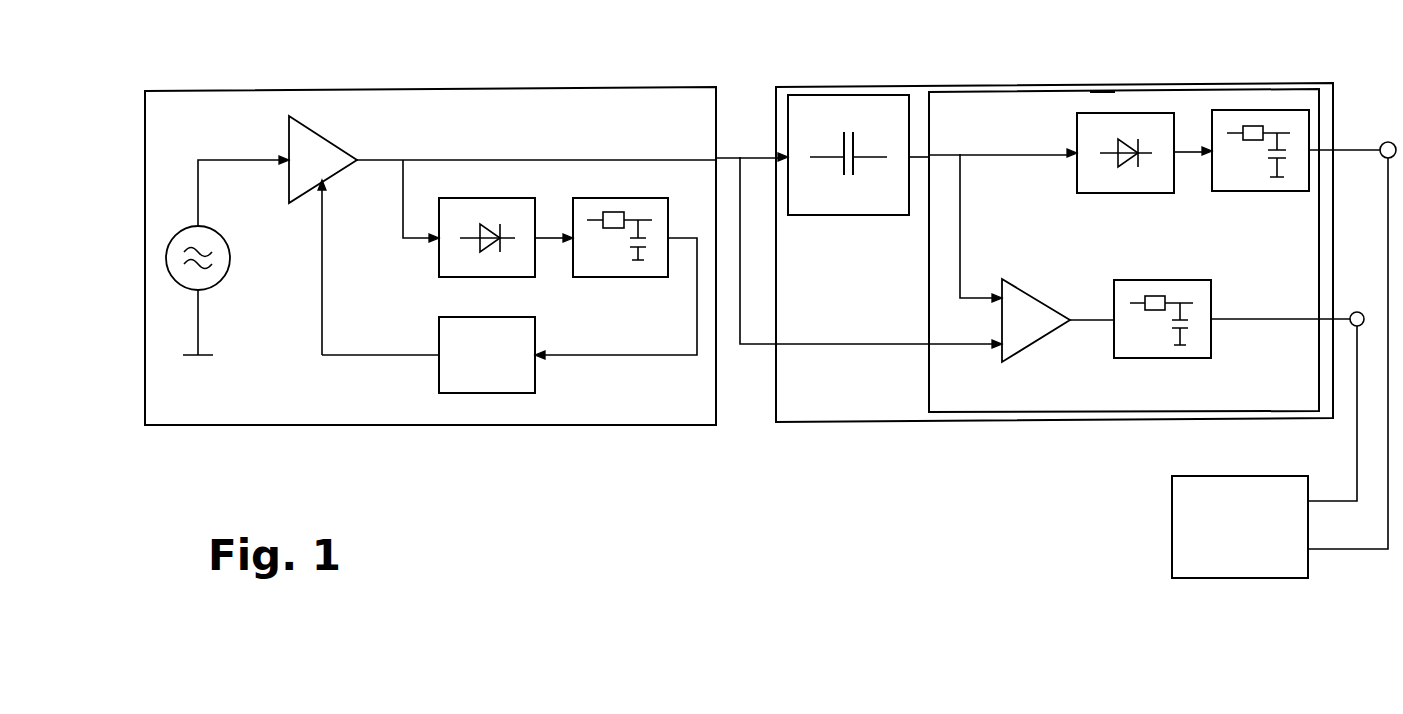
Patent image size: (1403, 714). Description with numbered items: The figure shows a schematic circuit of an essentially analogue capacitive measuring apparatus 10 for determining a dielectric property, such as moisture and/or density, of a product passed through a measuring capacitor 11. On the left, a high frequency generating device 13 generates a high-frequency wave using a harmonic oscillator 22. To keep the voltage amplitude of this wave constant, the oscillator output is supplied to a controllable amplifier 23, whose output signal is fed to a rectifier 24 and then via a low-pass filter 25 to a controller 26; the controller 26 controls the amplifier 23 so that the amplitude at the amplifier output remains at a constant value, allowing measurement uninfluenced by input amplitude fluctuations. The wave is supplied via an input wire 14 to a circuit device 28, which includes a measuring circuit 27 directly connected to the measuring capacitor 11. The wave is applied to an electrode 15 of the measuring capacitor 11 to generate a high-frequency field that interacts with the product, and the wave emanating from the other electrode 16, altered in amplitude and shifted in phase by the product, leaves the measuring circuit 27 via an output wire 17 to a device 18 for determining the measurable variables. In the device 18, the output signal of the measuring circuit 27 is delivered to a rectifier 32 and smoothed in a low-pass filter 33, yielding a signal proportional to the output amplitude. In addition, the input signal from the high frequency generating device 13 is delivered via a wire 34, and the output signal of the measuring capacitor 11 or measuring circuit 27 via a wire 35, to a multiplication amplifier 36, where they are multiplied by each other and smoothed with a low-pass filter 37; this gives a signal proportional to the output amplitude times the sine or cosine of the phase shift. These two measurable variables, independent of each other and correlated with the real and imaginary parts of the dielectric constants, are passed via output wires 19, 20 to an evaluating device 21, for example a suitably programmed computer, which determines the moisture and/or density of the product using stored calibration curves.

The capacitive measuring apparatus 10 is at (786, 486).
The measuring capacitor 11 is at (845, 120).
The high frequency generating device 13 is at (420, 90).
The input wire 14 is at (733, 157).
The electrode 15 is at (843, 150).
The other electrode 16 is at (853, 178).
The output wire 17 is at (917, 152).
The device for determining the measurable variables 18 is at (1102, 92).
The output wire 19 is at (1353, 150).
The output wire 20 is at (1332, 501).
The evaluating device 21 is at (1172, 545).
The harmonic oscillator 22 is at (166, 258).
The controllable amplifier 23 is at (317, 134).
The rectifier 24 is at (500, 198).
The low-pass filter 25 is at (610, 198).
The controller 26 is at (487, 393).
The measuring circuit 27 is at (878, 95).
The circuit device 28 is at (1014, 92).
The rectifier 32 is at (1142, 113).
The low-pass filter 33 is at (1262, 110).
The wire 34 is at (757, 350).
The wire 35 is at (968, 300).
The multiplication amplifier 36 is at (1020, 362).
The low-pass filter 37 is at (1125, 358).